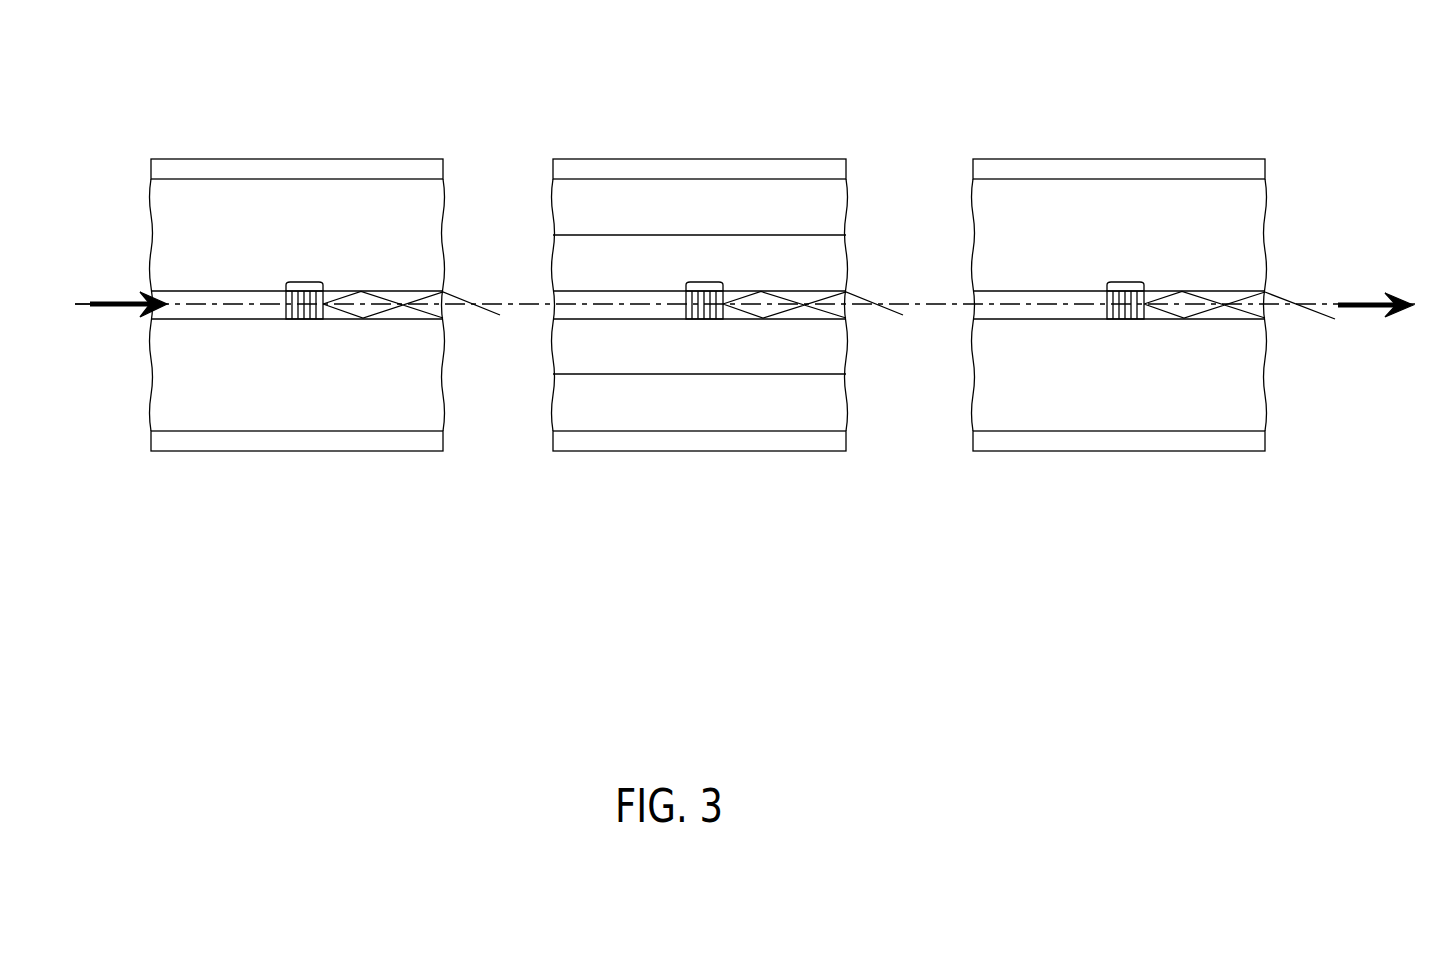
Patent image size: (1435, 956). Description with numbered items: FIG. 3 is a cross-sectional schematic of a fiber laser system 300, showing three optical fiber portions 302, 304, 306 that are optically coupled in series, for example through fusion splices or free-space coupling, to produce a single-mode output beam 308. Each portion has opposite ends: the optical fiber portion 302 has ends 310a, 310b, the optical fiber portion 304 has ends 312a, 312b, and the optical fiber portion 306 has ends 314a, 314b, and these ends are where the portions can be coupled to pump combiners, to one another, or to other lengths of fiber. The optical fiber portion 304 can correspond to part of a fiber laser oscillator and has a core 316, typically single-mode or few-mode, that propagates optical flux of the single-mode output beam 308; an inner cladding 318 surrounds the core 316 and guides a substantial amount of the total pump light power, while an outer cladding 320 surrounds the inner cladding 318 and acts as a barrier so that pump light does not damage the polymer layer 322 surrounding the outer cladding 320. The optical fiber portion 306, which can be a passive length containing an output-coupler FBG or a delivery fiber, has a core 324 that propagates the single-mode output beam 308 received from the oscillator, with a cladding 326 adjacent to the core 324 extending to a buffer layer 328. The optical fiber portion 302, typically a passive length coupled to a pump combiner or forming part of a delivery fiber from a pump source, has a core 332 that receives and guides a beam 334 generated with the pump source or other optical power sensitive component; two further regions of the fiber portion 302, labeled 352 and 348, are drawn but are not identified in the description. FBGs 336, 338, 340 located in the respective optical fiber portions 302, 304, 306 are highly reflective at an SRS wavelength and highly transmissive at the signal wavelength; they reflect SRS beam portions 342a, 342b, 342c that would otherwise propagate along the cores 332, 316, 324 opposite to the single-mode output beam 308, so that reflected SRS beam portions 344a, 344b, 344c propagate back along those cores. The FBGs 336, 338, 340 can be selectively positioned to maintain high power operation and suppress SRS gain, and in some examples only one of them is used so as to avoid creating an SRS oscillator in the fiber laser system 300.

The fiber laser system 300 is at (258, 562).
The optical fiber portion 302 is at (287, 288).
The optical fiber portion 304 is at (702, 300).
The optical fiber portion 306 is at (1119, 296).
The single-mode output beam 308 is at (1363, 300).
The end 310a is at (135, 222).
The end 310b is at (463, 213).
The end 312a is at (537, 428).
The end 312b is at (862, 415).
The end 314a is at (940, 177).
The end 314b is at (1308, 177).
The core 316 is at (632, 312).
The inner cladding 318 is at (647, 363).
The outer cladding 320 is at (610, 413).
The polymer layer 322 is at (577, 441).
The core 324 is at (1233, 312).
The cladding 326 is at (1225, 410).
The buffer layer 328 is at (1002, 442).
The core 332 is at (177, 313).
The beam 334 is at (112, 308).
The FBG 336 is at (303, 282).
The FBG 338 is at (703, 282).
The FBG 340 is at (1127, 278).
The SRS beam portion 342a is at (330, 313).
The SRS beam portion 342b is at (728, 318).
The SRS beam portion 342c is at (1157, 310).
The reflected SRS beam portion 344a is at (383, 303).
The reflected SRS beam portion 344b is at (787, 303).
The reflected SRS beam portion 344c is at (1207, 303).
The bottom layer of first chip 348 is at (400, 407).
The top layer of first chip 352 is at (372, 168).